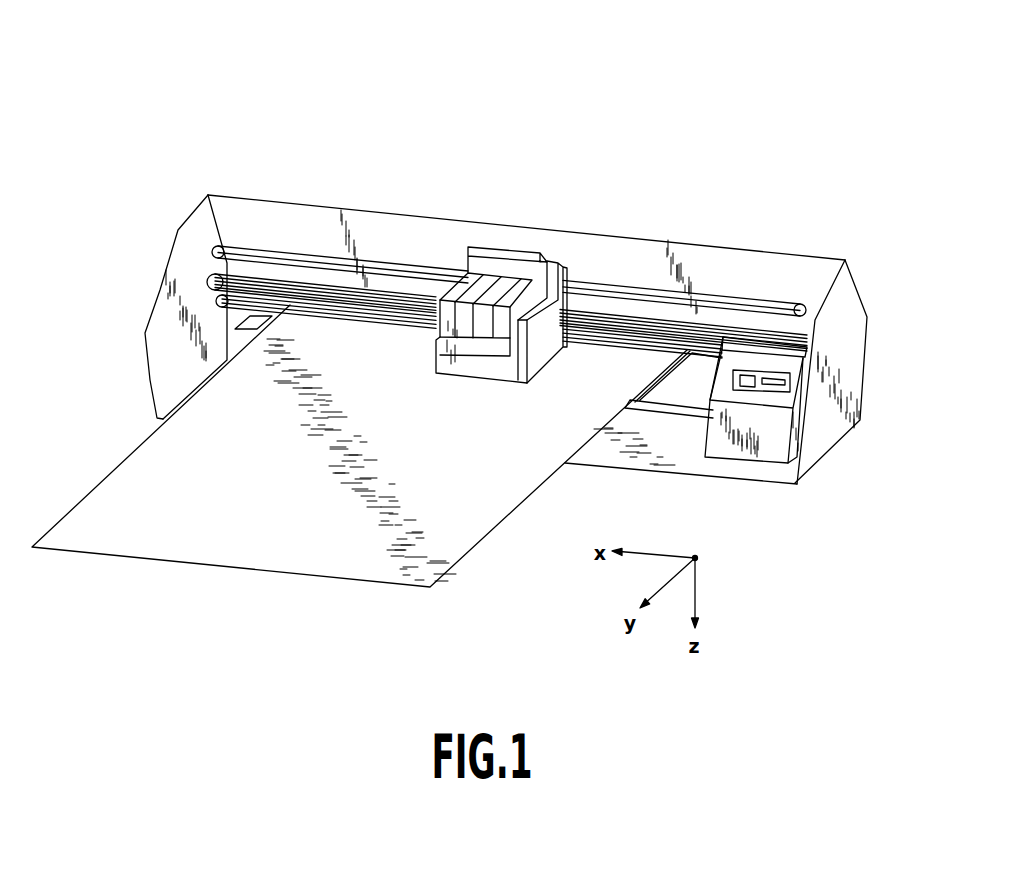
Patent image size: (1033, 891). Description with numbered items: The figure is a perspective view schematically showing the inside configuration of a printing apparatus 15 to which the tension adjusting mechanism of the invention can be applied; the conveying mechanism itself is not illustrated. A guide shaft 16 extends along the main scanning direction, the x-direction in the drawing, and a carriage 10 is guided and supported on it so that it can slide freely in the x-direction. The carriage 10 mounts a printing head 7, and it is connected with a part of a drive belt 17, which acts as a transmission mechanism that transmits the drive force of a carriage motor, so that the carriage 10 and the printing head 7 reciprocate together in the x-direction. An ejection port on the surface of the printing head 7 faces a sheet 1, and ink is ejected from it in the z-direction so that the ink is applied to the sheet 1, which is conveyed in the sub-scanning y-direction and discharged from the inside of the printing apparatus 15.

The sheet 1 is at (513, 508).
The printing head 7 is at (462, 282).
The carriage 10 is at (567, 277).
The printing apparatus 15 is at (797, 121).
The guide shaft 16 is at (303, 287).
The drive belt 17 is at (258, 245).